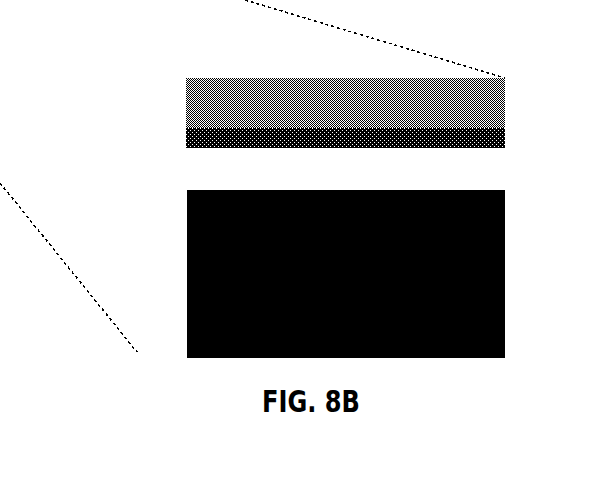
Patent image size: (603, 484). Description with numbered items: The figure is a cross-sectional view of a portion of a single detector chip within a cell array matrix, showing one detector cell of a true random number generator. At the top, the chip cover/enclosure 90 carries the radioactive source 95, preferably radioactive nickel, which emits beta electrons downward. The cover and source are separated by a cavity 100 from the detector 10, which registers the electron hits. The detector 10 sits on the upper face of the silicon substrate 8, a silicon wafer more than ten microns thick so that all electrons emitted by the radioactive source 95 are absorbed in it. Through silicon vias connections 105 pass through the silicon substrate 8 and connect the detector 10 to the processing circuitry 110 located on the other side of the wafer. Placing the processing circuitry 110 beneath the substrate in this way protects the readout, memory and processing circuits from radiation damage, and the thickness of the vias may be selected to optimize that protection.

The silicon substrate 8 is at (505, 243).
The detector 10 is at (221, 212).
The chip cover/enclosure 90 is at (188, 90).
The radioactive source 95 is at (188, 145).
The cavity 100 is at (195, 173).
The through silicon vias connections 105 is at (438, 265).
The processing circuitry 110 is at (392, 350).